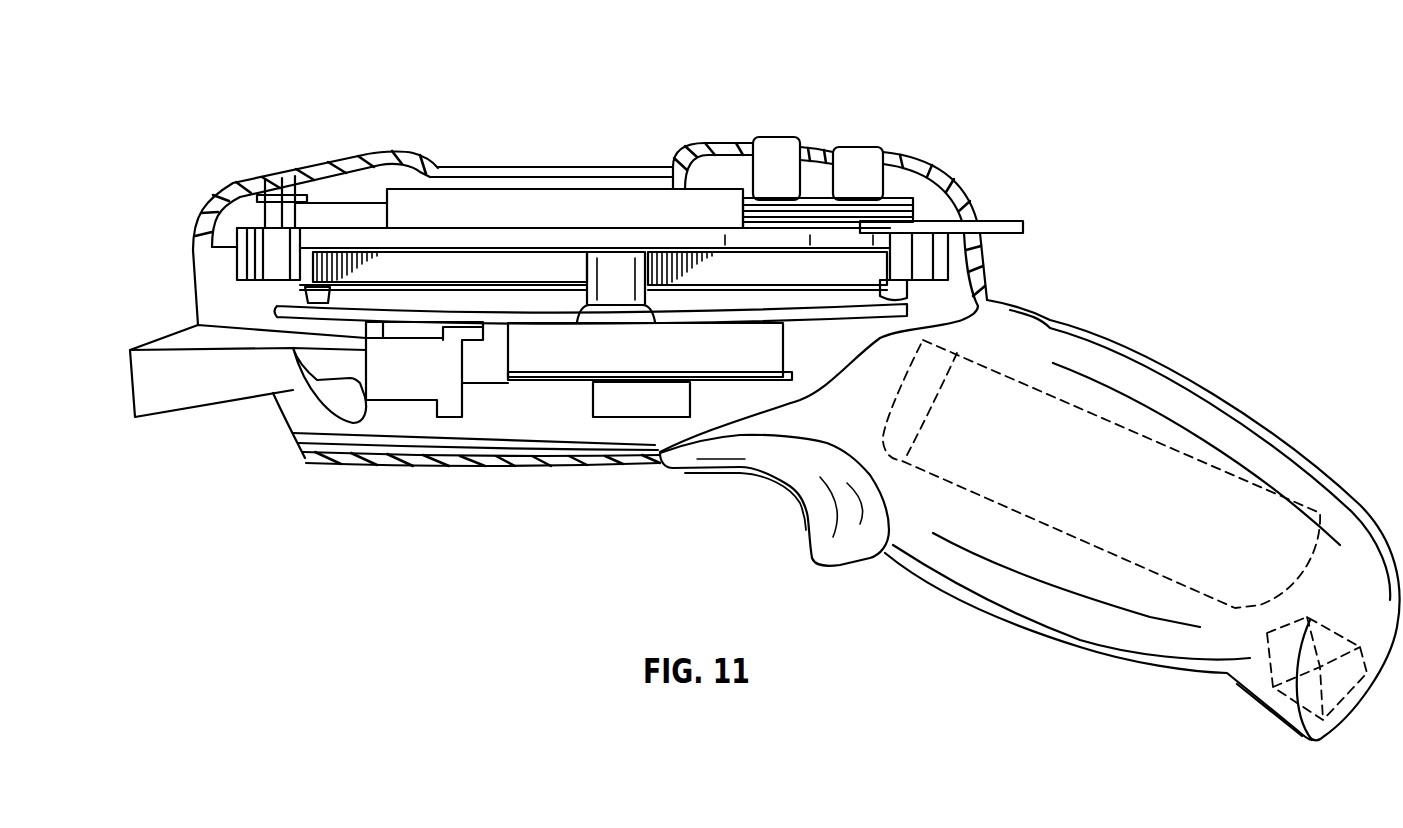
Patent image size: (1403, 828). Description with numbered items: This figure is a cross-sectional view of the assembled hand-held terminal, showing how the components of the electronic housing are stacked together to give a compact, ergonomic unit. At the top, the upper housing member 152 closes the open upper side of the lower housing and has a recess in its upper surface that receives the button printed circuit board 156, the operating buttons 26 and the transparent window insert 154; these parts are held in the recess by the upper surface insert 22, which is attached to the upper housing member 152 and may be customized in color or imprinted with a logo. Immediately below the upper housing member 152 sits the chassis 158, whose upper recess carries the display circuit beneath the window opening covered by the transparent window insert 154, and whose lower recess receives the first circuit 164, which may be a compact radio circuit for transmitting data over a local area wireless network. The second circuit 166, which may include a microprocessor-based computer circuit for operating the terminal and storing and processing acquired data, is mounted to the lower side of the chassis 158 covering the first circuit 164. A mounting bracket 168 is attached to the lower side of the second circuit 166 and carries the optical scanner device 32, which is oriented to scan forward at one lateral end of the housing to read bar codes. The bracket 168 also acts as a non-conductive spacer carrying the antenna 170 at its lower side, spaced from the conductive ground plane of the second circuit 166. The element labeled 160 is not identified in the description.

The upper surface insert 22 is at (353, 163).
The operating buttons 26 is at (853, 163).
The optical scanner device 32 is at (405, 383).
The upper housing member 152 is at (220, 203).
The transparent window insert 154 is at (523, 183).
The button printed circuit board 156 is at (900, 210).
The chassis 158 is at (693, 257).
The motor housing 160 is at (467, 200).
The first circuit 164 is at (860, 263).
The second circuit 166 is at (495, 302).
The mounting bracket 168 is at (588, 352).
The antenna 170 is at (670, 373).